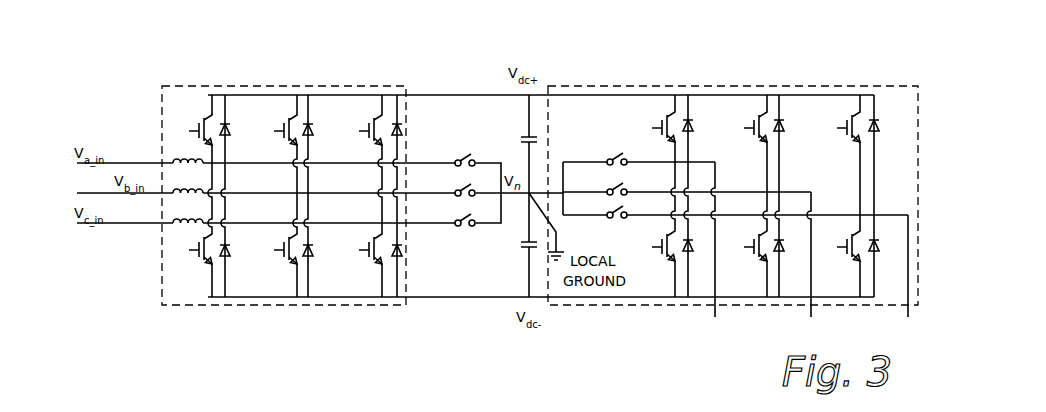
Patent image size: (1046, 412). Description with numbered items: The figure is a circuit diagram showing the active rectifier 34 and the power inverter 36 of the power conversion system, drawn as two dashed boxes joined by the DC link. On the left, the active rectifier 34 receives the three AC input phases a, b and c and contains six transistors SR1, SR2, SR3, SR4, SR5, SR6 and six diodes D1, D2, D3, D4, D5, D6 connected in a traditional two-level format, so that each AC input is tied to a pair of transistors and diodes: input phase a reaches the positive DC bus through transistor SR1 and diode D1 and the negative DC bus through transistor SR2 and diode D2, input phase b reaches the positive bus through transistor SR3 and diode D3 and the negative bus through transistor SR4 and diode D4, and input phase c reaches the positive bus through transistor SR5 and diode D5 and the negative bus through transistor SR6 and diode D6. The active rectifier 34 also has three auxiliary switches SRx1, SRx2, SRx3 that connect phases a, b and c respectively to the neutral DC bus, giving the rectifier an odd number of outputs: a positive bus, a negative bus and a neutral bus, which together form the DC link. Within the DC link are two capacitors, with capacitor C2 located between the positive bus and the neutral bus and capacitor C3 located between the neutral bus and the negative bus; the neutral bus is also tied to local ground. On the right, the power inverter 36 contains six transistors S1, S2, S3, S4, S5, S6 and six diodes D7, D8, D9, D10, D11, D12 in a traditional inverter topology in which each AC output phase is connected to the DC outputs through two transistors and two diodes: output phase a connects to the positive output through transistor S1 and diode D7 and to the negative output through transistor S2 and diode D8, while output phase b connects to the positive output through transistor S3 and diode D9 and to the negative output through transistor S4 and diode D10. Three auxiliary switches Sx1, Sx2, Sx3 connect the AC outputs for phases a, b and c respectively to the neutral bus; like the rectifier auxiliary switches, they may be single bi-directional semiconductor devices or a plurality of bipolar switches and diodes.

The active rectifier 34 is at (302, 86).
The power inverter 36 is at (757, 84).
The transistor SR1 is at (190, 131).
The transistor SR2 is at (188, 250).
The transistor SR3 is at (273, 131).
The transistor SR4 is at (273, 250).
The transistor SR5 is at (358, 131).
The transistor SR6 is at (359, 250).
The diode D1 is at (235, 135).
The diode D2 is at (235, 244).
The diode D3 is at (319, 135).
The diode D4 is at (319, 244).
The diode D5 is at (408, 131).
The diode D6 is at (408, 249).
The auxiliary switch SRx1 is at (448, 156).
The auxiliary switch SRx2 is at (448, 186).
The auxiliary switch SRx3 is at (448, 216).
The capacitor C2 is at (521, 139).
The capacitor C3 is at (521, 245).
The auxiliary switch Sx1 is at (599, 156).
The auxiliary switch Sx2 is at (599, 186).
The auxiliary switch Sx3 is at (599, 209).
The transistor S1 is at (657, 128).
The transistor S2 is at (655, 249).
The transistor S3 is at (747, 128).
The transistor S4 is at (747, 249).
The transistor S5 is at (840, 128).
The transistor S6 is at (839, 247).
The diode D7 is at (698, 119).
The diode D8 is at (698, 240).
The diode D9 is at (789, 119).
The diode D10 is at (794, 240).
The diode D11 is at (889, 119).
The diode D12 is at (889, 239).